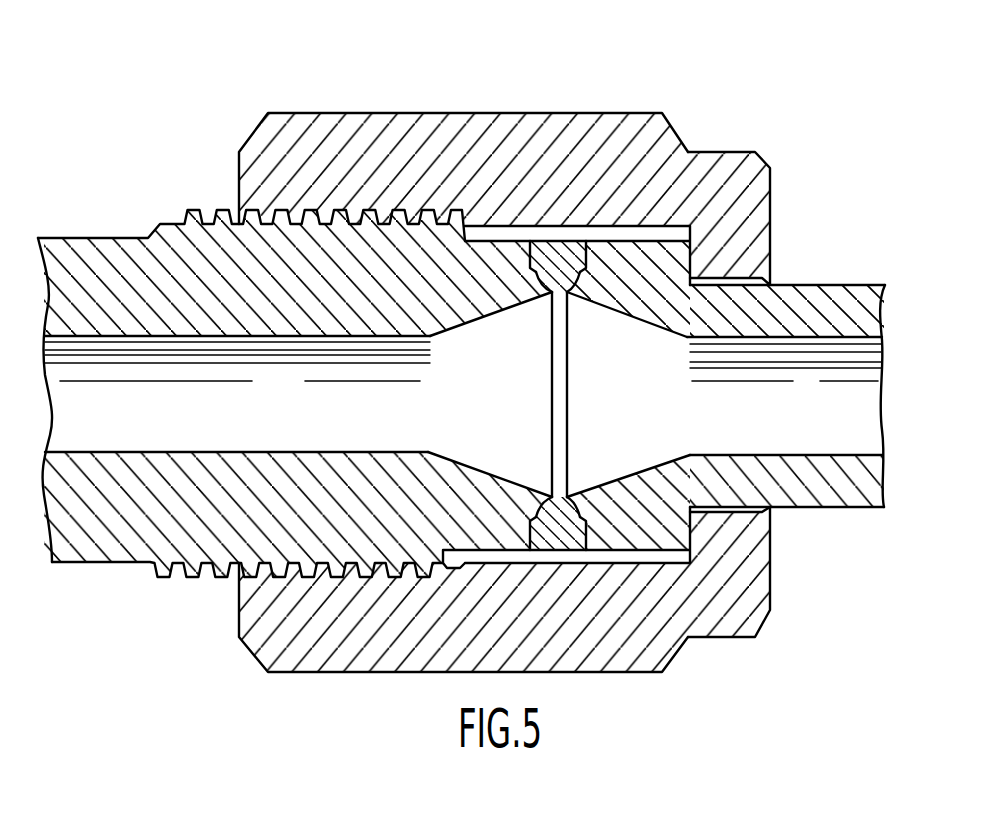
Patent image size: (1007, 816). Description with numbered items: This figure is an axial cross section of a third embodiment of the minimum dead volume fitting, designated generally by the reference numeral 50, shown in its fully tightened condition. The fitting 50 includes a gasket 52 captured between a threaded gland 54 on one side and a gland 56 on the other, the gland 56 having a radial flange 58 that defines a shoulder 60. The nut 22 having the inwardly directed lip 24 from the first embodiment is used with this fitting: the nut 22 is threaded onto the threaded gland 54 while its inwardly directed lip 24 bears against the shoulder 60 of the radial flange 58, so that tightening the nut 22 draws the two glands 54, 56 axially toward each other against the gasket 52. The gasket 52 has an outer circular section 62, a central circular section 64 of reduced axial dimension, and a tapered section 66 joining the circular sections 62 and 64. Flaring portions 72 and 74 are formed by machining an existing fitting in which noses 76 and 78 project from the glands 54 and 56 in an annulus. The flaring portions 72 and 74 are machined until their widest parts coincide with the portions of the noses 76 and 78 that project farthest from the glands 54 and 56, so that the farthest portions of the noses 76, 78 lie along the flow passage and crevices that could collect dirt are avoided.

The fitting 50 is at (220, 72).
The nut 22 is at (513, 113).
The inwardly directed lip 24 is at (773, 234).
The gasket 52 is at (566, 230).
The threaded gland 54 is at (100, 248).
The gland 56 is at (836, 292).
The radial flange 58 is at (667, 246).
The shoulder 60 is at (713, 506).
The outer circular section 62 is at (548, 488).
The central circular section 64 is at (549, 498).
The tapered section 66 is at (567, 498).
The flaring portion 72 is at (458, 321).
The flaring portion 74 is at (664, 321).
The nose 76 is at (539, 291).
The nose 78 is at (579, 291).